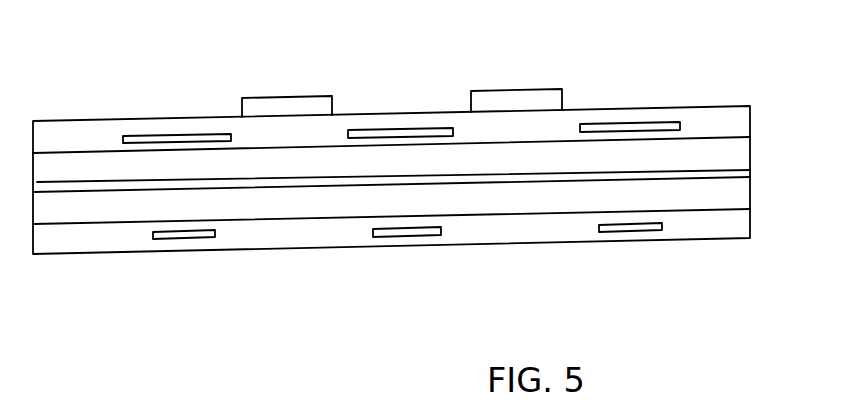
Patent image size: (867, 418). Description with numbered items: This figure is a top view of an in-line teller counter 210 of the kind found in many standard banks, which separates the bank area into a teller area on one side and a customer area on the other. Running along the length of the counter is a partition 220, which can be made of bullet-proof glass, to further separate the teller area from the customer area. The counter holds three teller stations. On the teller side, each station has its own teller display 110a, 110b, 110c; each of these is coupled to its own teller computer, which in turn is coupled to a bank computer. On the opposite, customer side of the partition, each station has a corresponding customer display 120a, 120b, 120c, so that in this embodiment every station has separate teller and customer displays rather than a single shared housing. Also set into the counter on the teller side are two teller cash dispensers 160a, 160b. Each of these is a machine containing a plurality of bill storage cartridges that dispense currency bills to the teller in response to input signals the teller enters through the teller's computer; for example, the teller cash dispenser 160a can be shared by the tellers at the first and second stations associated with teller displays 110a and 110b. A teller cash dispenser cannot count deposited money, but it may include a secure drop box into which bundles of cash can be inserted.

The teller display 110a is at (166, 138).
The teller display 110b is at (400, 132).
The teller display 110c is at (640, 124).
The customer display 120a is at (192, 239).
The customer display 120b is at (412, 238).
The customer display 120c is at (636, 232).
The teller cash dispenser 160a is at (250, 98).
The teller cash dispenser 160b is at (498, 98).
The in-line teller counter 210 is at (752, 115).
The partition 220 is at (752, 172).